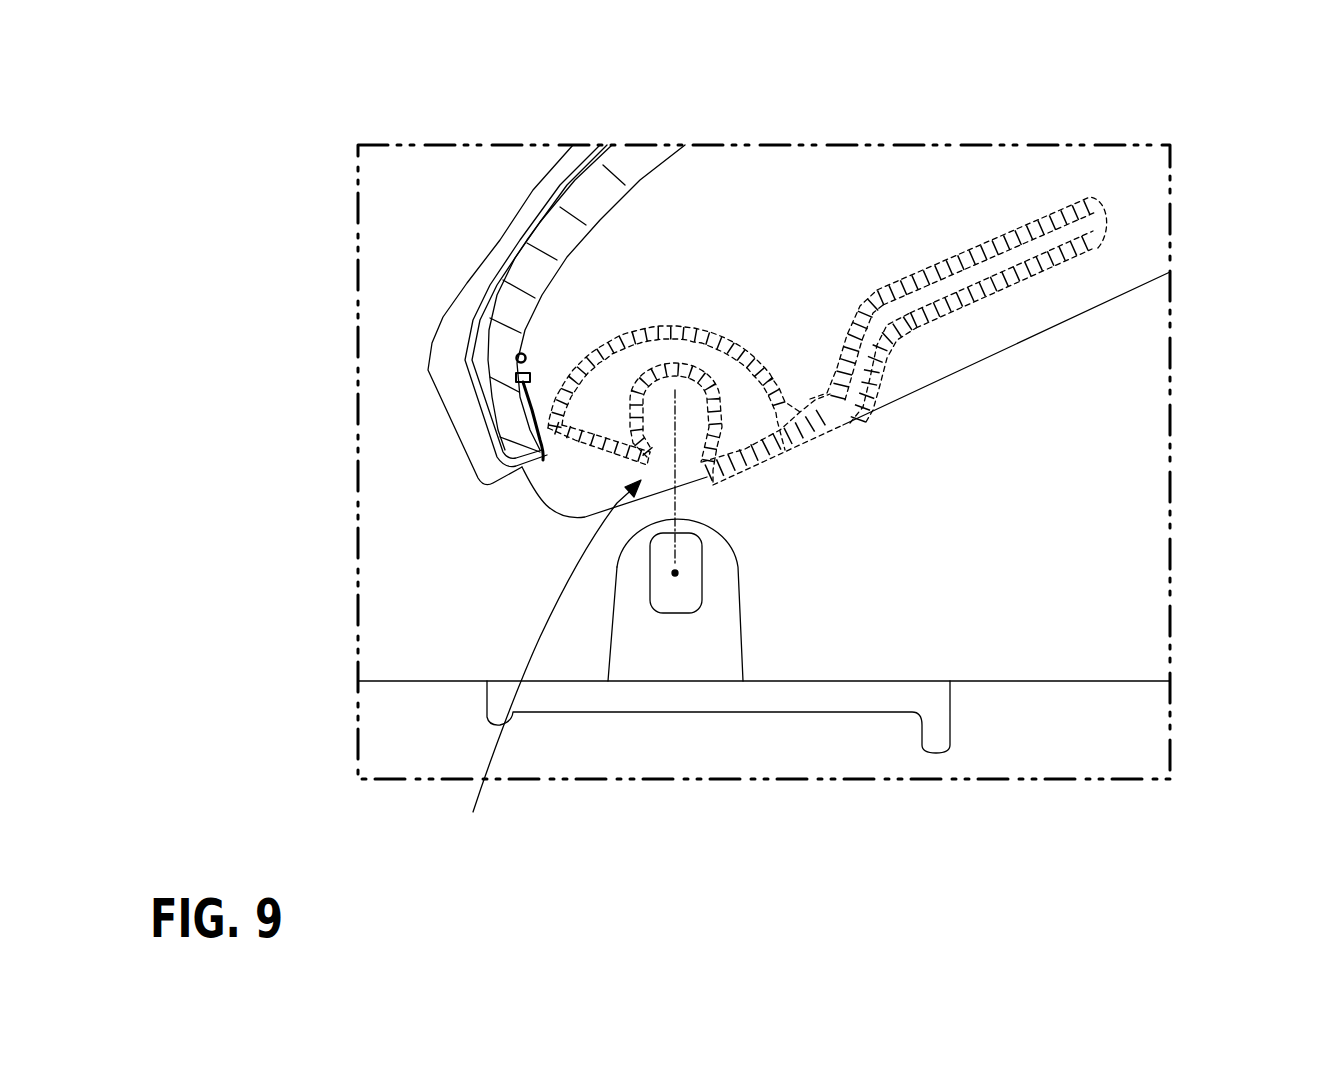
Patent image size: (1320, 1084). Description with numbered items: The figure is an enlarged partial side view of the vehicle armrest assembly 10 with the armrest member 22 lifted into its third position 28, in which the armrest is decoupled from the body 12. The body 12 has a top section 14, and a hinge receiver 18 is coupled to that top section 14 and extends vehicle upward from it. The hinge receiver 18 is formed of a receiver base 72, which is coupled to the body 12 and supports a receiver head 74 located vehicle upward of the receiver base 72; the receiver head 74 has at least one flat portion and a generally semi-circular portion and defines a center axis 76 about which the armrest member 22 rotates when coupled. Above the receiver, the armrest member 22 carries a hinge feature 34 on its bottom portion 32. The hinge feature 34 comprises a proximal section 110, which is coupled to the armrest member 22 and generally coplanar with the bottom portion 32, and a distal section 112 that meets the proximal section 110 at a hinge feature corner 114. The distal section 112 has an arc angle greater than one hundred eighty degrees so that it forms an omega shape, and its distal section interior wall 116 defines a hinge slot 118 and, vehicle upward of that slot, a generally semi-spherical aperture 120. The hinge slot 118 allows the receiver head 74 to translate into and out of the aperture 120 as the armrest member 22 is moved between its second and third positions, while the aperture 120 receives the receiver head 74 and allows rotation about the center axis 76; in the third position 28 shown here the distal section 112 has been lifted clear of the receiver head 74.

The vehicle armrest assembly 10 is at (428, 290).
The body 12 is at (1127, 730).
The top section 14 is at (412, 681).
The hinge receiver 18 is at (743, 657).
The armrest member 22 is at (493, 220).
The third position 28 is at (538, 218).
The bottom portion 32 is at (1016, 361).
The hinge feature 34 is at (674, 325).
The receiver base 72 is at (635, 647).
The receiver head 74 is at (668, 613).
The center axis 76 is at (675, 573).
The proximal section 110 is at (997, 246).
The distal section 112 is at (760, 345).
The hinge feature corner 114 is at (797, 392).
The distal section interior wall 116 is at (645, 358).
The hinge slot 118 is at (543, 663).
The aperture 120 is at (760, 458).